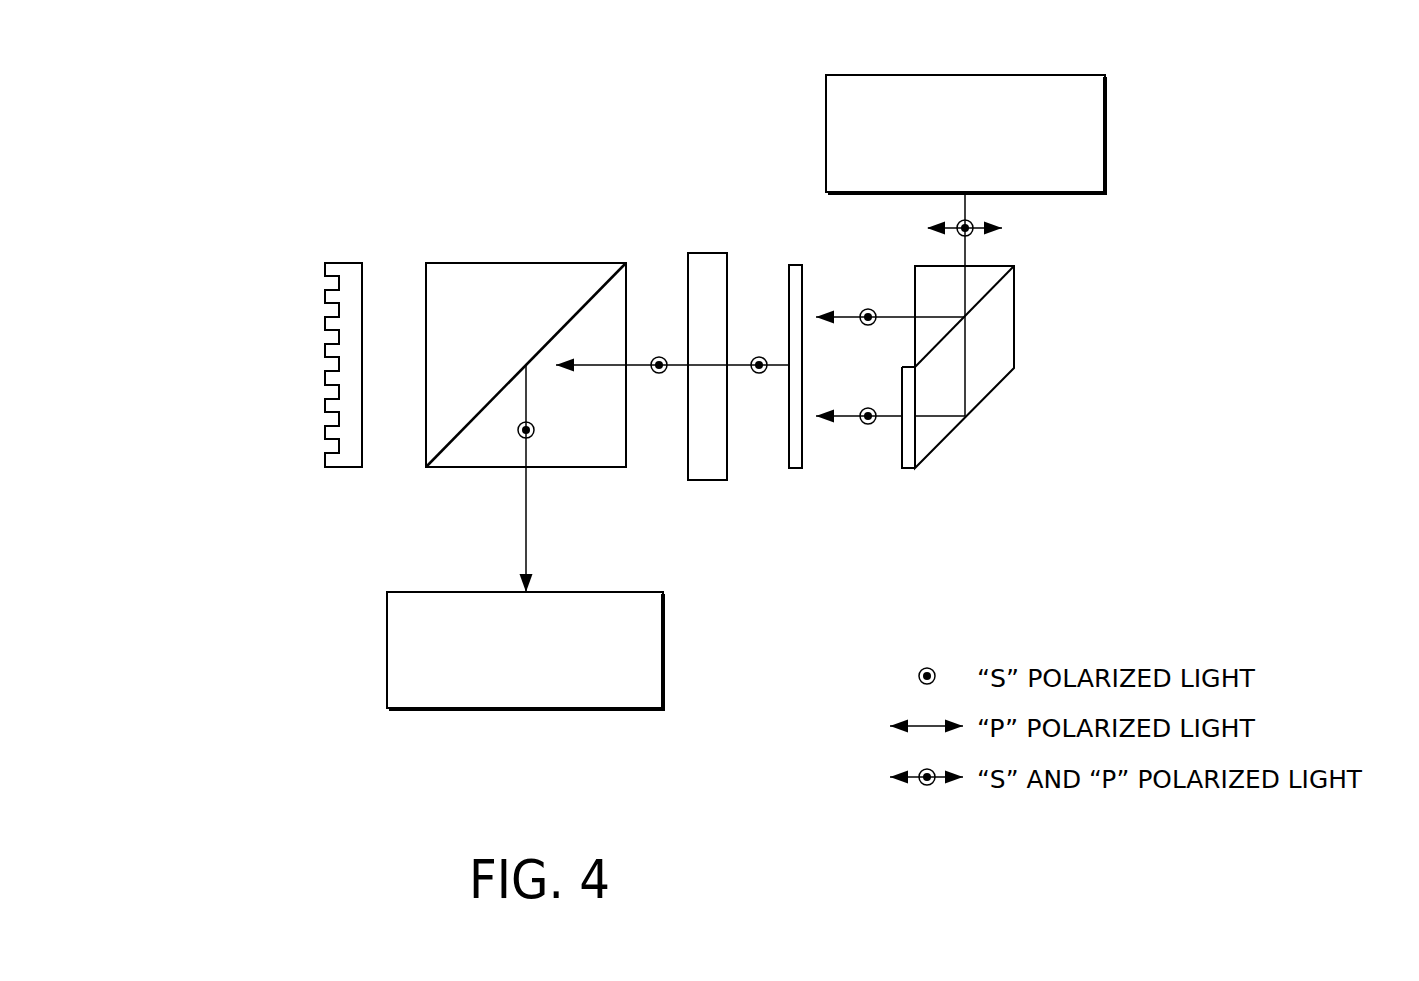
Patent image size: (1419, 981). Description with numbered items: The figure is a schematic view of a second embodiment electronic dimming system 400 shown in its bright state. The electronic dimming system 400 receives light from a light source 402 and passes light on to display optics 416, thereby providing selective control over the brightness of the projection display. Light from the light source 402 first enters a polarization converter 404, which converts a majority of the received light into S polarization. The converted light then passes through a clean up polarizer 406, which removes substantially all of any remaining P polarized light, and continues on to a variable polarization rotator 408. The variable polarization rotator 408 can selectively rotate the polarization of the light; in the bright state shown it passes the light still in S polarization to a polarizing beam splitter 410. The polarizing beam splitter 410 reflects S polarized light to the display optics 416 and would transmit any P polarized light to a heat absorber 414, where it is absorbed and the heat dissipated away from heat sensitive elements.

The electronic dimming system 400 is at (275, 480).
The light source 402 is at (978, 75).
The polarization converter 404 is at (1014, 328).
The clean up polarizer 406 is at (801, 265).
The variable polarization rotator 408 is at (706, 253).
The polarizing beam splitter 410 is at (527, 263).
The heat absorber 414 is at (344, 263).
The display optics 416 is at (664, 680).